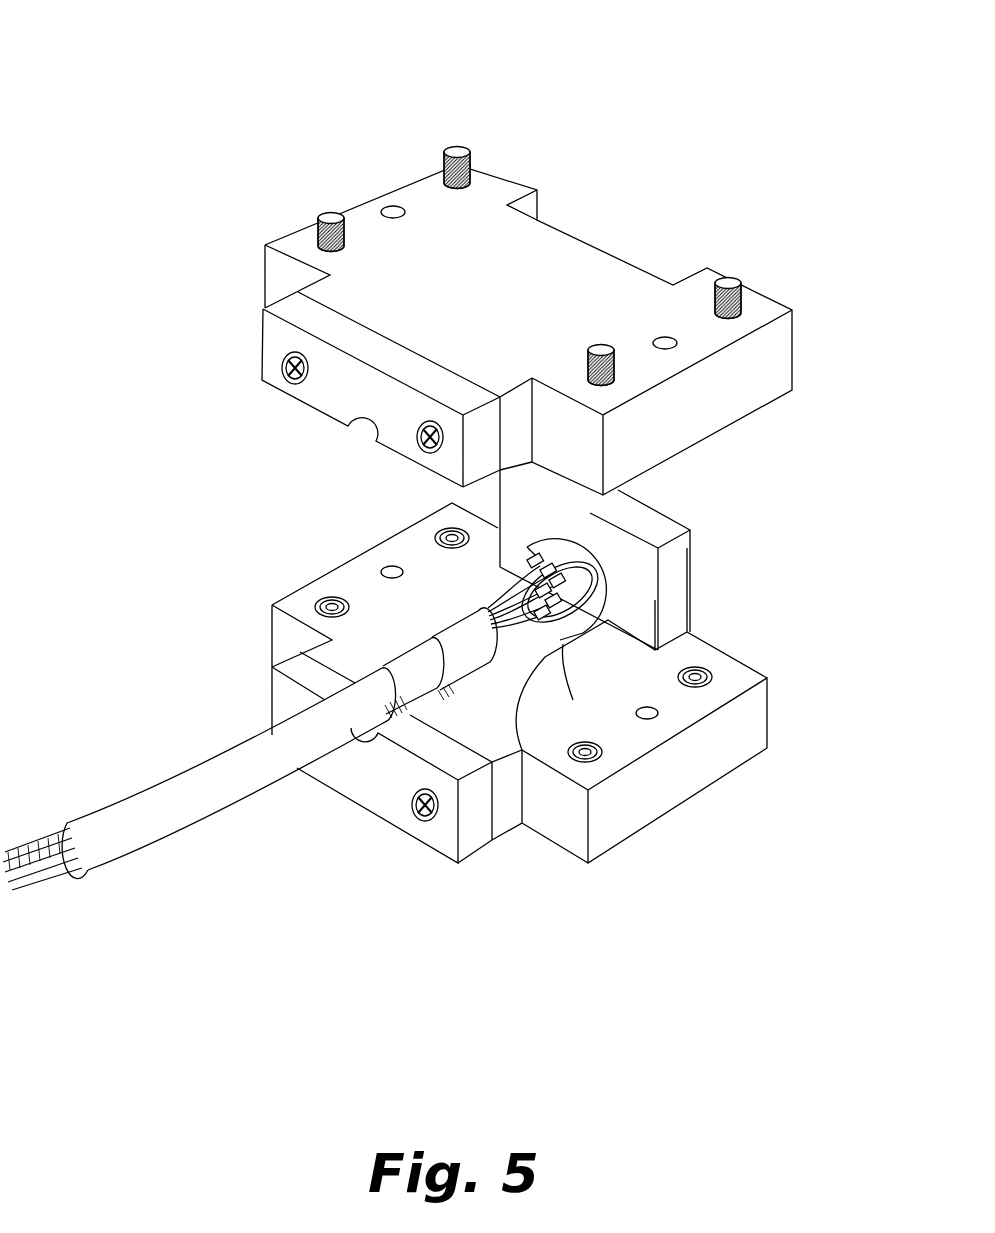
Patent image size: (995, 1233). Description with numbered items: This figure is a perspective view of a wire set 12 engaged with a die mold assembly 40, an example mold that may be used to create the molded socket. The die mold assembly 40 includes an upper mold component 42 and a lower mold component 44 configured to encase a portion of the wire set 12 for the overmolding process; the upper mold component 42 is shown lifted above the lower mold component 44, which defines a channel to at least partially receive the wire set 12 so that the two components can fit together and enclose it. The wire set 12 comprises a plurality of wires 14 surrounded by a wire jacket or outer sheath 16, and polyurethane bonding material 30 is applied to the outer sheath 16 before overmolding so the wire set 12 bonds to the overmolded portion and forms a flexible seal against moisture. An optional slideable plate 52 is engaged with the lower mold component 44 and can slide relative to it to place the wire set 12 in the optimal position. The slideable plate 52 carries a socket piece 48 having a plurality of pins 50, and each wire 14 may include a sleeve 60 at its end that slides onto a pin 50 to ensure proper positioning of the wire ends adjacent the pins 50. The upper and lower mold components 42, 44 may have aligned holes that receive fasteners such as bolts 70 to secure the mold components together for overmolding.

The wire set 12 is at (177, 668).
The wires 14 is at (525, 645).
The outer sheath 16 is at (247, 806).
The polyurethane bonding material 30 is at (392, 688).
The die mold assembly 40 is at (75, 170).
The upper mold component 42 is at (800, 356).
The lower mold component 44 is at (767, 700).
The socket piece 48 is at (615, 569).
The pins 50 is at (592, 548).
The slideable plate 52 is at (690, 607).
The sleeve 60 is at (563, 644).
The bolts 70 is at (745, 290).